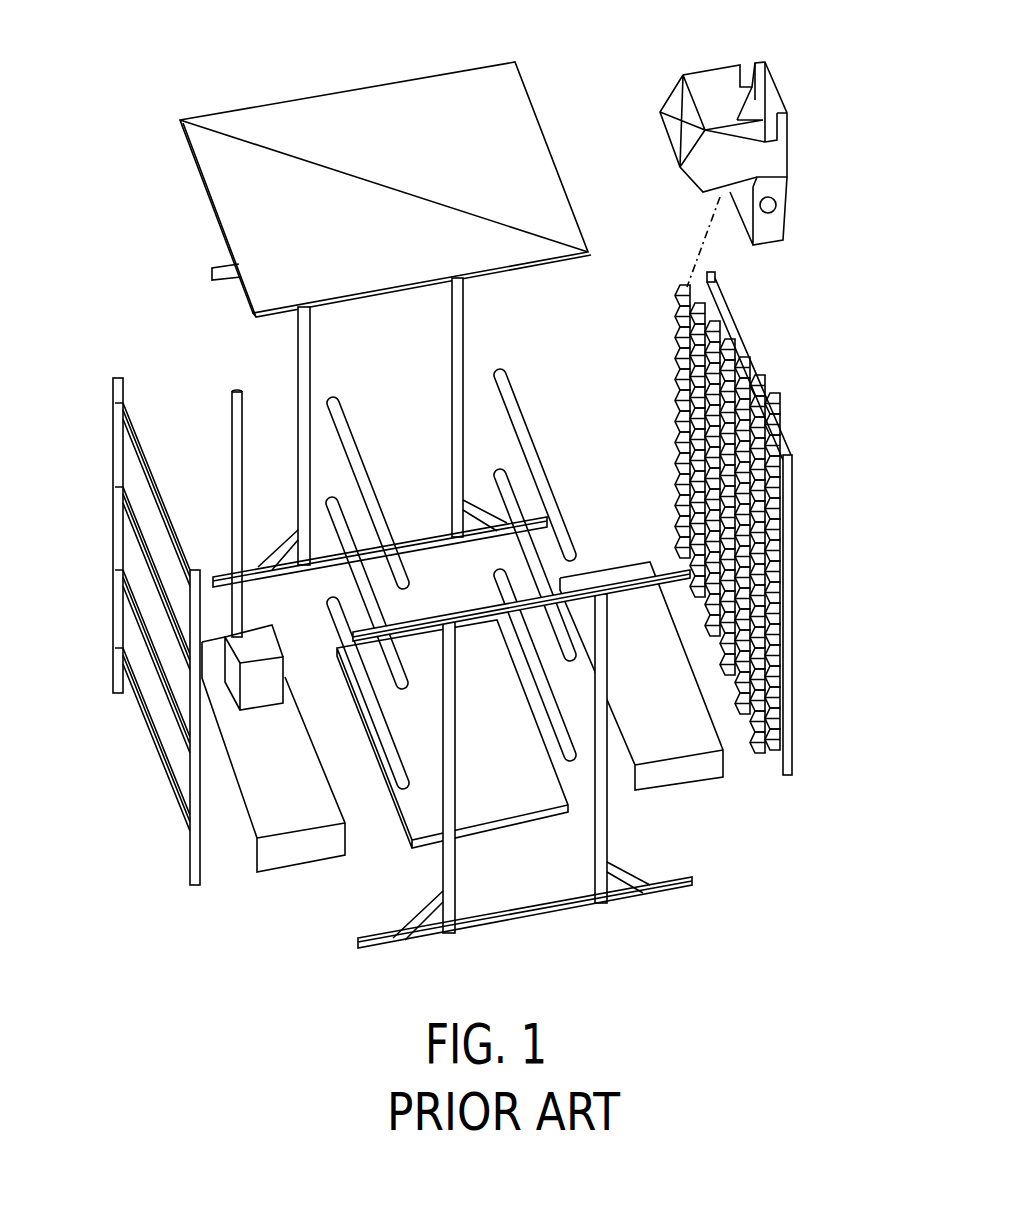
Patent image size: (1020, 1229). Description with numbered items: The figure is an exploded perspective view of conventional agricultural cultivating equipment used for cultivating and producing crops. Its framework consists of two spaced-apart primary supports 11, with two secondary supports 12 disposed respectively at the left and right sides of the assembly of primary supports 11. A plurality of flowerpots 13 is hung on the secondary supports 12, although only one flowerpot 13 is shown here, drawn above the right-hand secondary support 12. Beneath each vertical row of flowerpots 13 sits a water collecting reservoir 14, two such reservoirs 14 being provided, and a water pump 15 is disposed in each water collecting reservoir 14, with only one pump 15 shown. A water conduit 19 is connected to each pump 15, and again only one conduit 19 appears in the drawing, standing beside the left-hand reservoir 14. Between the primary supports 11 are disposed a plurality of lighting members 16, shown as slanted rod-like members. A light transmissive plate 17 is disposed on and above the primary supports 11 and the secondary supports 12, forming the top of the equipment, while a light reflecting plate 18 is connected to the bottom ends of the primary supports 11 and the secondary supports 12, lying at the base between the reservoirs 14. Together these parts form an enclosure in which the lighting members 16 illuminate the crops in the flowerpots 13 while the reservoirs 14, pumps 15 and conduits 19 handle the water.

The primary support 11 is at (462, 305).
The secondary support 12 is at (113, 361).
The flowerpot 13 is at (777, 87).
The water collecting reservoir 14 is at (291, 873).
The water pump 15 is at (273, 677).
The lighting member 16 is at (350, 425).
The light transmissive plate 17 is at (345, 100).
The light reflecting plate 18 is at (424, 845).
The water conduit 19 is at (230, 410).